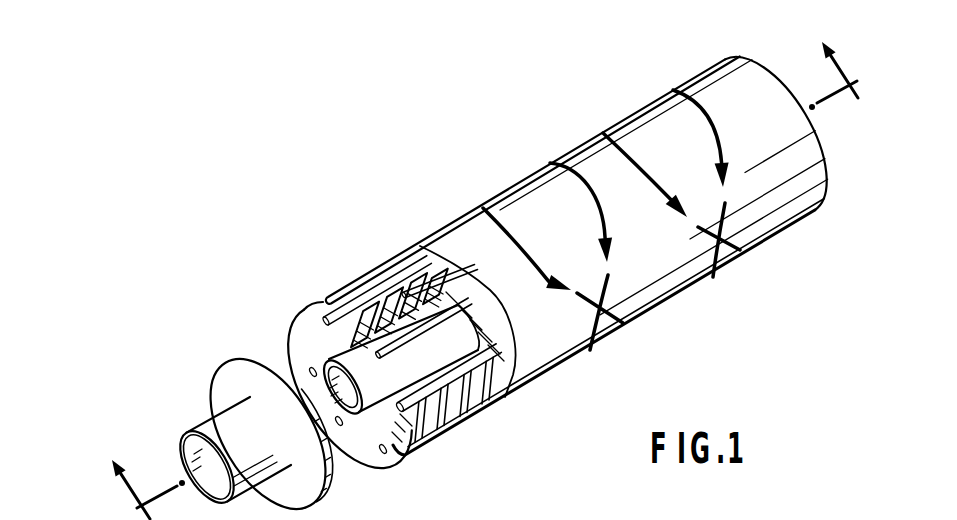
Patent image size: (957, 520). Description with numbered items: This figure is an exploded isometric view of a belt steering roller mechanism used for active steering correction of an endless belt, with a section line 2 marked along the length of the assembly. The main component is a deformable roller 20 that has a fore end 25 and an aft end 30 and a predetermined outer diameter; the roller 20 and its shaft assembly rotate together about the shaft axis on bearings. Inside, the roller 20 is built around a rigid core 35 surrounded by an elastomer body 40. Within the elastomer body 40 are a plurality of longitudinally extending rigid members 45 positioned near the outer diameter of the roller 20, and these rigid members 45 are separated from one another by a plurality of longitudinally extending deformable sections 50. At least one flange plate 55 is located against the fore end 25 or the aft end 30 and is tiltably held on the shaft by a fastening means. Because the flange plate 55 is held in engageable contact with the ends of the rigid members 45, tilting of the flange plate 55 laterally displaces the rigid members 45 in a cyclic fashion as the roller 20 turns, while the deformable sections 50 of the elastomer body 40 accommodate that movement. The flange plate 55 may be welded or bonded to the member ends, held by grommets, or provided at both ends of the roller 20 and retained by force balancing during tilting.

The section line 2- 2 is at (475, 264).
The deformable roller 20 is at (529, 162).
The fore end 25 is at (313, 312).
The aft end 30 is at (746, 54).
The rigid core 35 is at (431, 442).
The elastomer body 40 is at (507, 397).
The longitudinally extending rigid members 45 is at (370, 288).
The longitudinally extending deformable sections 50 is at (501, 336).
The flange plate 55 is at (228, 390).